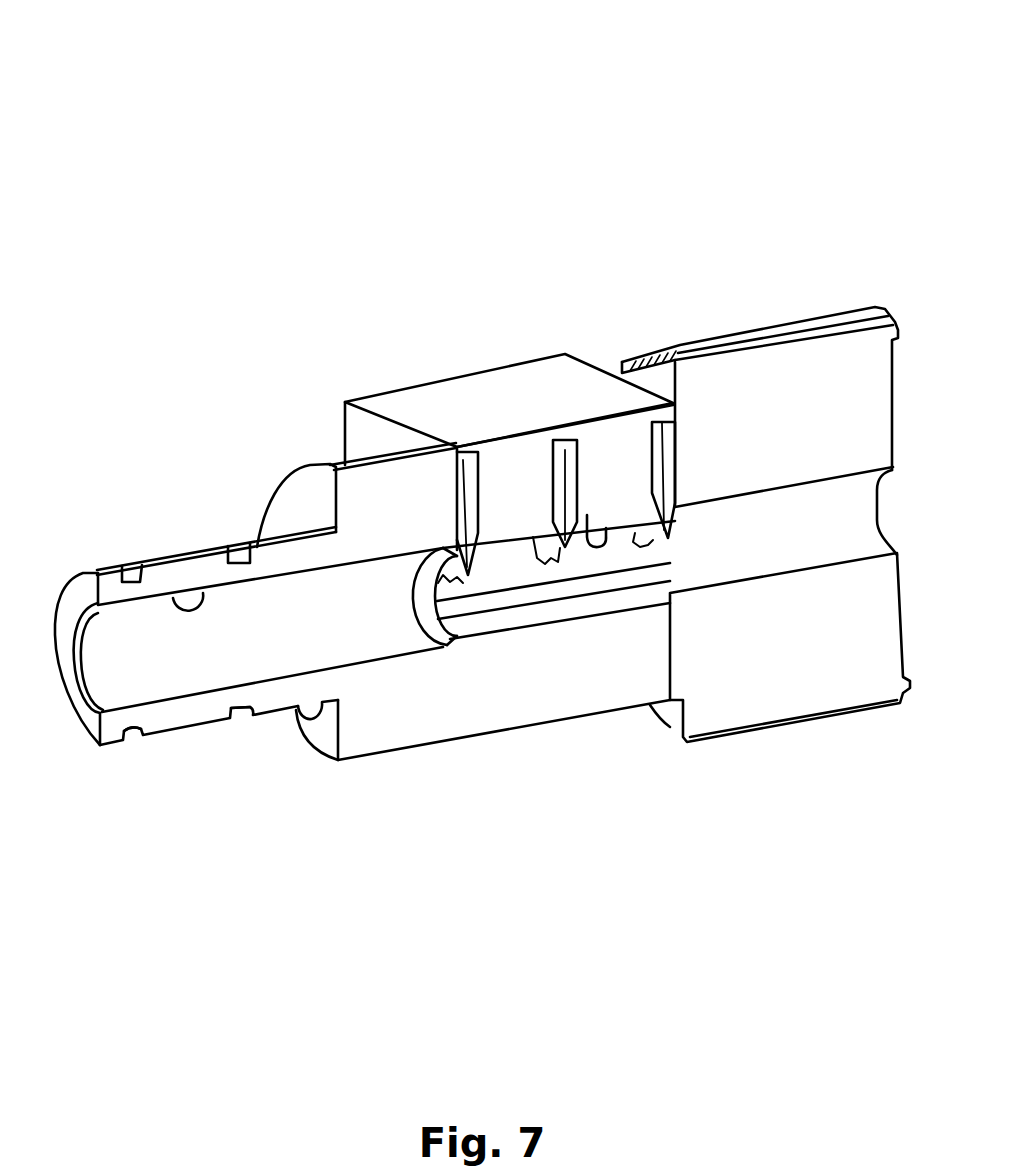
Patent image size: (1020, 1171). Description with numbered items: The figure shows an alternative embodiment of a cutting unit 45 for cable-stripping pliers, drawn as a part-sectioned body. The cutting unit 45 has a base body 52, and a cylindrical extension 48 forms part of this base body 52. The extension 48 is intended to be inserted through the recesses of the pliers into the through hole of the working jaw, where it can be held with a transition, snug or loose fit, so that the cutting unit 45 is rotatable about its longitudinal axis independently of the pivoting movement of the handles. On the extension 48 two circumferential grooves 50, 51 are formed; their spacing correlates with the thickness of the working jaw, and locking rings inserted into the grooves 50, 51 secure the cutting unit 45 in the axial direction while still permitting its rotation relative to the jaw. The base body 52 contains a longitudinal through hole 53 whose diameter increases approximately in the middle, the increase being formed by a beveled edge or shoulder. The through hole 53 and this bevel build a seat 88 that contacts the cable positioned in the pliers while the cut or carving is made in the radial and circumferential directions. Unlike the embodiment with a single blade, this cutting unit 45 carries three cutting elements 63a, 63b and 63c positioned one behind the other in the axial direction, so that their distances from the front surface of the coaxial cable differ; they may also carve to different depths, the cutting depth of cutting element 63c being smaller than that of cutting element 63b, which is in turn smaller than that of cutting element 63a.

The cutting unit 45 is at (490, 312).
The cylindrical extension 48 is at (187, 717).
The circumferential groove 50 is at (132, 737).
The circumferential groove 51 is at (238, 717).
The base body 52 is at (397, 713).
The through hole 53 is at (205, 592).
The cutting element 63a is at (462, 577).
The cutting element 63b is at (565, 547).
The cutting element 63c is at (669, 538).
The seat 88 is at (587, 515).